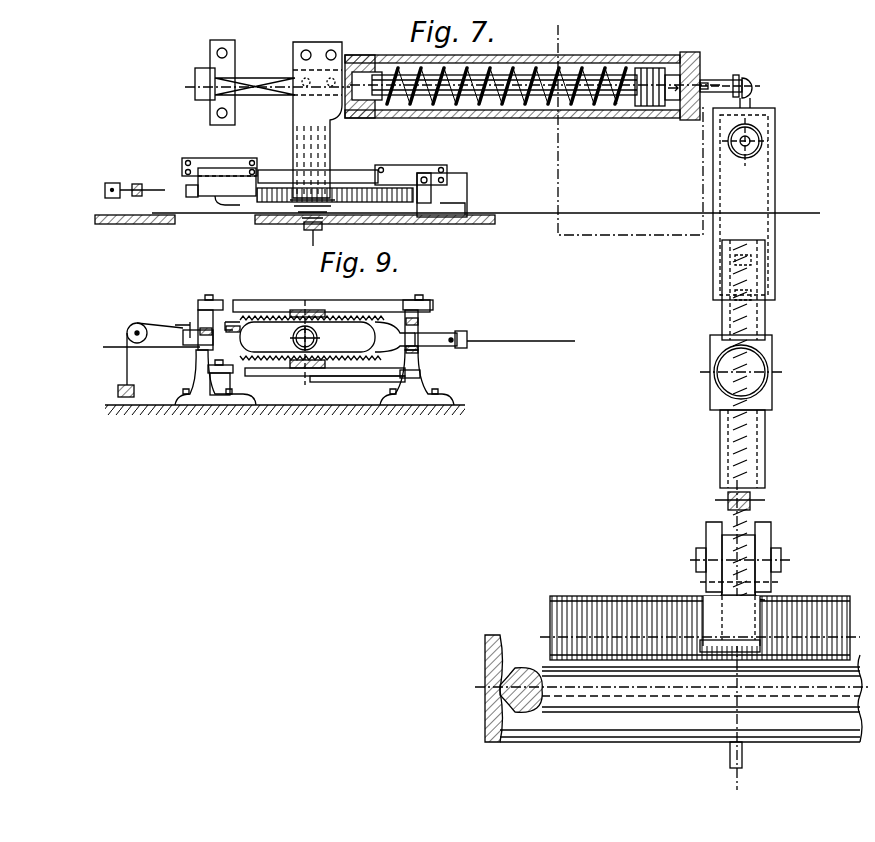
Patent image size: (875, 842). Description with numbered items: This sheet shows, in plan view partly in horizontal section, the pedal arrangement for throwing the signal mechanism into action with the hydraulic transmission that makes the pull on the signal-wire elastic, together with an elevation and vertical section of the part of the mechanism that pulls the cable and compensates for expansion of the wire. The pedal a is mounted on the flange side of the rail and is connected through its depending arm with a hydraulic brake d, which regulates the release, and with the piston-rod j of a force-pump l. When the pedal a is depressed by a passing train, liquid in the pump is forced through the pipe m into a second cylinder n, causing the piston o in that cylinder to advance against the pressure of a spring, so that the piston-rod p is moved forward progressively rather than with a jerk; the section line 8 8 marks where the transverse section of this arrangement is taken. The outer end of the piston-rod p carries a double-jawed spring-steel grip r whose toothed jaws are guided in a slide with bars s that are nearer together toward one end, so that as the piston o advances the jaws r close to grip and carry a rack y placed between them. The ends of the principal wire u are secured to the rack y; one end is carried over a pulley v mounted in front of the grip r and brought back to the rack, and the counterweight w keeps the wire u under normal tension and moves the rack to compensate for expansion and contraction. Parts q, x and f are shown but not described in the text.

In FIG. 7, the section line 8 8 is at (636, 415).
In FIG. 7, the plate q is at (266, 70).
In FIG. 7, the double-jawed spring-steel grip r is at (292, 152).
In FIG. 9, the double-jawed spring-steel grip r is at (312, 370).
In FIG. 7, the second cylinder n is at (545, 120).
In FIG. 7, the piston-rod p is at (488, 112).
In FIG. 7, the piston o is at (652, 108).
In FIG. 7, the pipe m is at (731, 80).
In FIG. 7, the force-pump l is at (775, 185).
In FIG. 7, the hydraulic brake d is at (772, 397).
In FIG. 7, the pedal a is at (608, 602).
In FIG. 7, the piston-rod j is at (748, 757).
In FIG. 7, the principal wire u is at (165, 218).
In FIG. 9, the principal wire u is at (194, 348).
In FIG. 7, the counterweight w is at (130, 190).
In FIG. 9, the counterweight w is at (114, 390).
In FIG. 7, the bars of the slide s is at (362, 172).
In FIG. 9, the bars of the slide s is at (374, 302).
In FIG. 9, the standard x is at (203, 382).
In FIG. 9, the pulley v is at (322, 338).
In FIG. 9, the rack y is at (380, 356).
In FIG. 9, the lower bar f is at (288, 373).